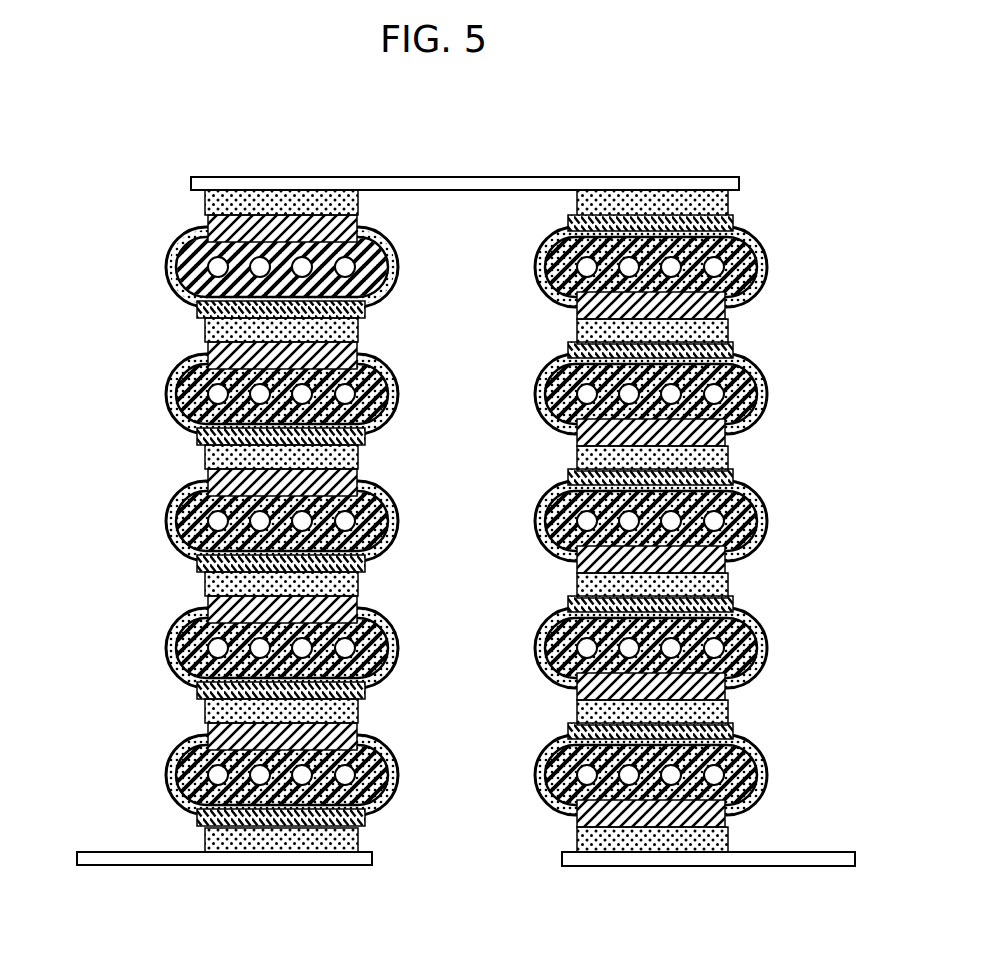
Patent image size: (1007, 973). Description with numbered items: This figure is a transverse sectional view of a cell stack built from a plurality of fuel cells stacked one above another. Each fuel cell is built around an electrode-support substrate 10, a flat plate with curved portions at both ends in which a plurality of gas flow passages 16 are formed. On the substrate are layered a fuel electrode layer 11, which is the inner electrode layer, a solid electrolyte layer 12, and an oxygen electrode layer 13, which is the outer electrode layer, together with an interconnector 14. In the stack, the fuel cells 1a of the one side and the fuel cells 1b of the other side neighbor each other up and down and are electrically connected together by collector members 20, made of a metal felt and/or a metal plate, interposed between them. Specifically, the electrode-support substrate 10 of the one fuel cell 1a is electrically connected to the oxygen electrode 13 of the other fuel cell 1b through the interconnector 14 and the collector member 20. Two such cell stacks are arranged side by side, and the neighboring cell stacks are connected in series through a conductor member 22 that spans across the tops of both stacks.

The fuel cell of the one side 1a is at (150, 648).
The fuel cell of the other side 1b is at (150, 777).
The electrode-support substrate 10 is at (188, 243).
The fuel electrode layer 11 is at (165, 262).
The solid electrolyte layer 12 is at (173, 287).
The oxygen electrode layer 13 is at (190, 313).
The interconnector 14 is at (193, 230).
The gas flow passages 16 is at (390, 262).
The collector member 20 is at (360, 198).
The conductor member 22 is at (485, 186).